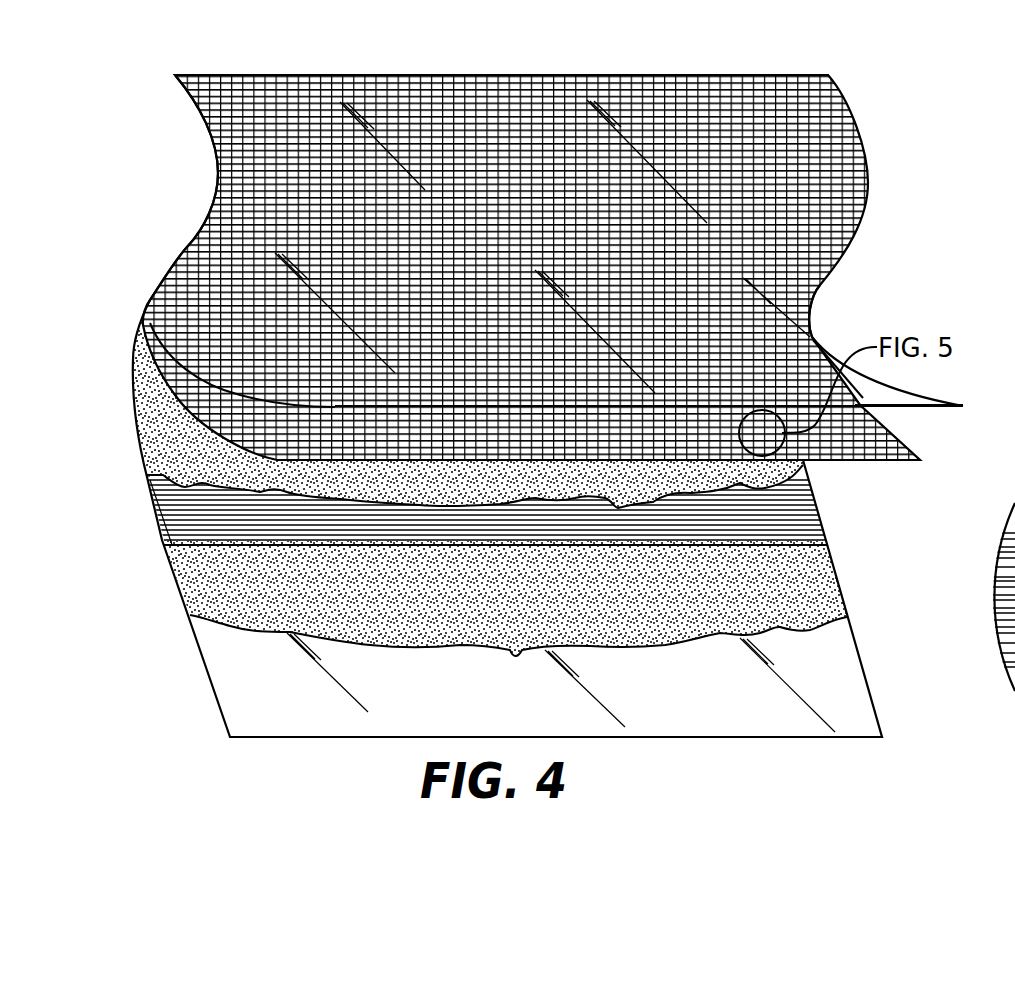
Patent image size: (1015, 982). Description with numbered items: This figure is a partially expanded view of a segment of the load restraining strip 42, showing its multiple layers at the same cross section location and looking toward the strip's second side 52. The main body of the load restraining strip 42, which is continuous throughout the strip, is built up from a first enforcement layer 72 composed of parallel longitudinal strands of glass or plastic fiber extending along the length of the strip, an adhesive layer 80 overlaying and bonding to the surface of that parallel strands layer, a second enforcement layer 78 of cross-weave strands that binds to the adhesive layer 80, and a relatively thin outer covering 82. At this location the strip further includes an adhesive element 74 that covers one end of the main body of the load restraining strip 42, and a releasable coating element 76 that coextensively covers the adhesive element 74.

The load restraining strip 42 is at (178, 258).
The second side 52 is at (205, 712).
The first enforcement layer 72 is at (810, 532).
The adhesive element 74 is at (827, 602).
The releasable coating element 76 is at (845, 695).
The second enforcement layer 78 is at (920, 460).
The adhesive layer 80 is at (803, 462).
The outer covering 82 is at (812, 338).